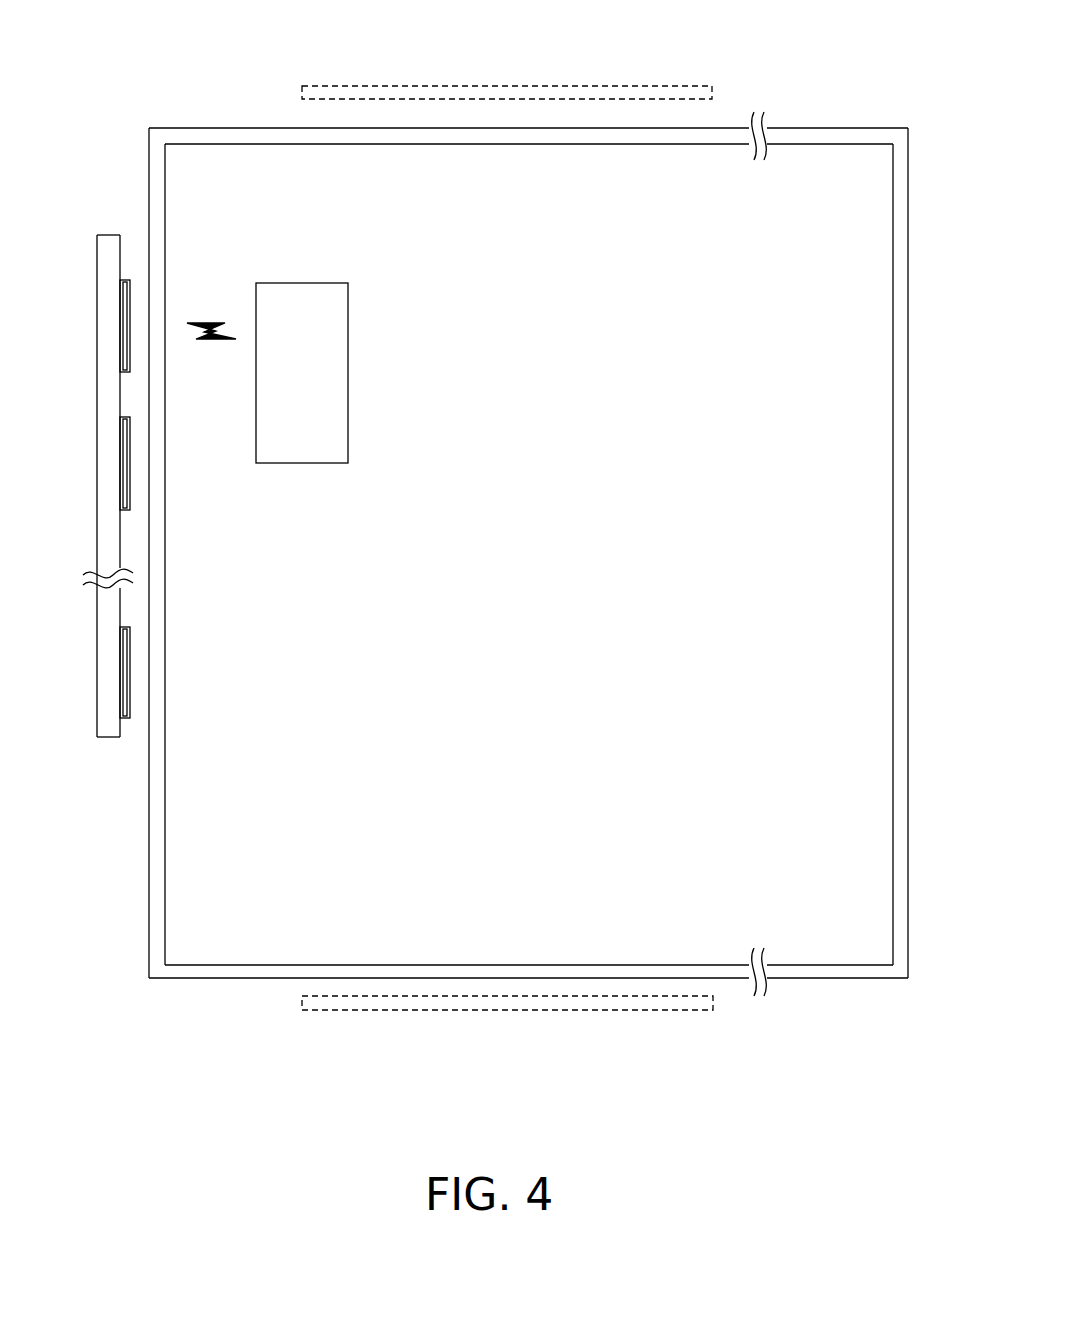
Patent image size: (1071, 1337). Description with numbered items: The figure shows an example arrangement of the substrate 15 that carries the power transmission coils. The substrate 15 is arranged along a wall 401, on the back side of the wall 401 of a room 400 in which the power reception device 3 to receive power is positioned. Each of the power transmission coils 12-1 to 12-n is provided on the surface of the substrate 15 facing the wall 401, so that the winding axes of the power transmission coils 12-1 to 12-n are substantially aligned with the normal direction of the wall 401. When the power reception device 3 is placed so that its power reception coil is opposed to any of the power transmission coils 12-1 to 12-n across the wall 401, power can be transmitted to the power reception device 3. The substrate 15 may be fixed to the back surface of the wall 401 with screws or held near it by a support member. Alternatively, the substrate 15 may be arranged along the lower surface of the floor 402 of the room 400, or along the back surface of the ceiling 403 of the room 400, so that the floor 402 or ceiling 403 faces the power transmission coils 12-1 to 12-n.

The power reception device 3 is at (303, 466).
The power transmission coil 12-1 is at (122, 307).
The power transmission coil 12-n is at (122, 678).
The substrate 15 is at (676, 86).
The room 400 is at (501, 561).
The wall 401 is at (152, 915).
The floor 402 is at (801, 972).
The ceiling 403 is at (828, 136).